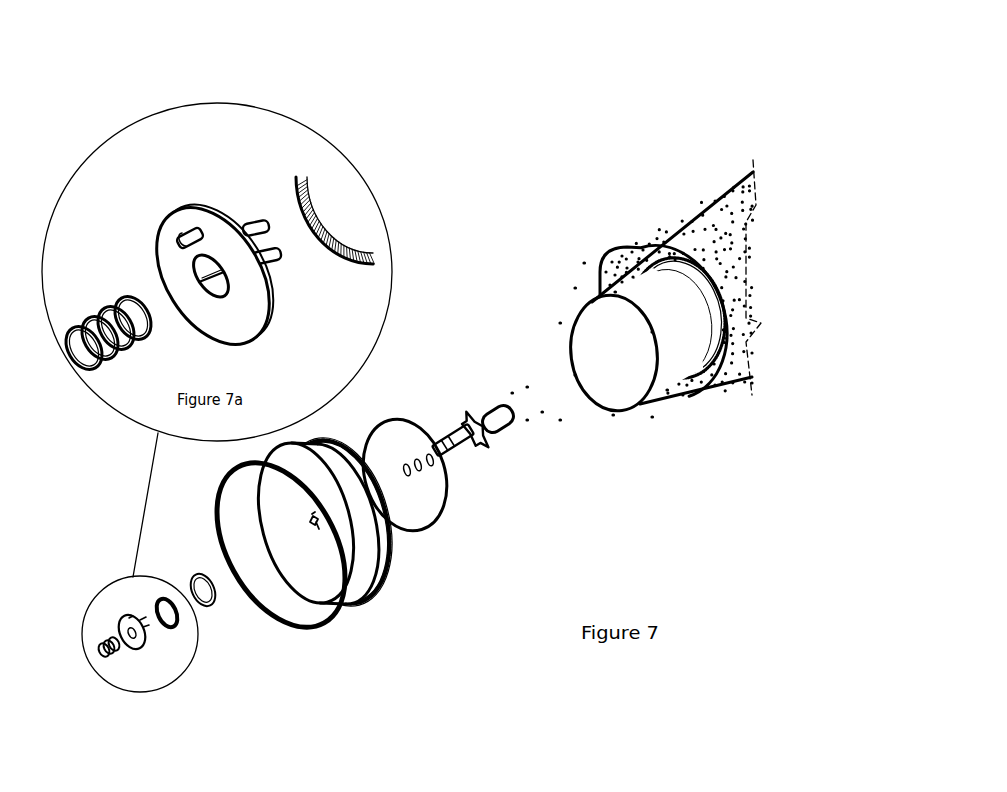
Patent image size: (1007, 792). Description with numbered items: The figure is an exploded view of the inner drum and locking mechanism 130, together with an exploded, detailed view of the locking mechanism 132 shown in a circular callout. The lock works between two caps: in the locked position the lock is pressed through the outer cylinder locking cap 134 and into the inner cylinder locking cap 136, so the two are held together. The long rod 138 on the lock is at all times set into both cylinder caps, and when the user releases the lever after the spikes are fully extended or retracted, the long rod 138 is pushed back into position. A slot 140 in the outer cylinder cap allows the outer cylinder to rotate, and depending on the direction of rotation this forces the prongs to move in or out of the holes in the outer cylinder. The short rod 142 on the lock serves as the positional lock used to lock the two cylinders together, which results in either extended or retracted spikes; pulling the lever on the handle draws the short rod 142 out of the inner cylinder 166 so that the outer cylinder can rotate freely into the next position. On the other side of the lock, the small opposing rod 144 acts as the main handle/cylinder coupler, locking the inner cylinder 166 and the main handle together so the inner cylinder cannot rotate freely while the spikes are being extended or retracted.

In FIG. 7, the inner drum and locking mechanism 130 is at (503, 240).
In FIG. 7A, the locking mechanism 132 is at (147, 112).
In FIG. 7, the outer cylinder locking cap 134 is at (372, 597).
In FIG. 7, the inner cylinder locking cap 136 is at (390, 556).
In FIG. 7A, the long rod 138 is at (275, 272).
In FIG. 7, the slot 140 is at (316, 530).
In FIG. 7A, the short rod 142 is at (258, 222).
In FIG. 7A, the small opposing rod 144 is at (183, 237).
In FIG. 7, the inner cylinder 166 is at (692, 380).